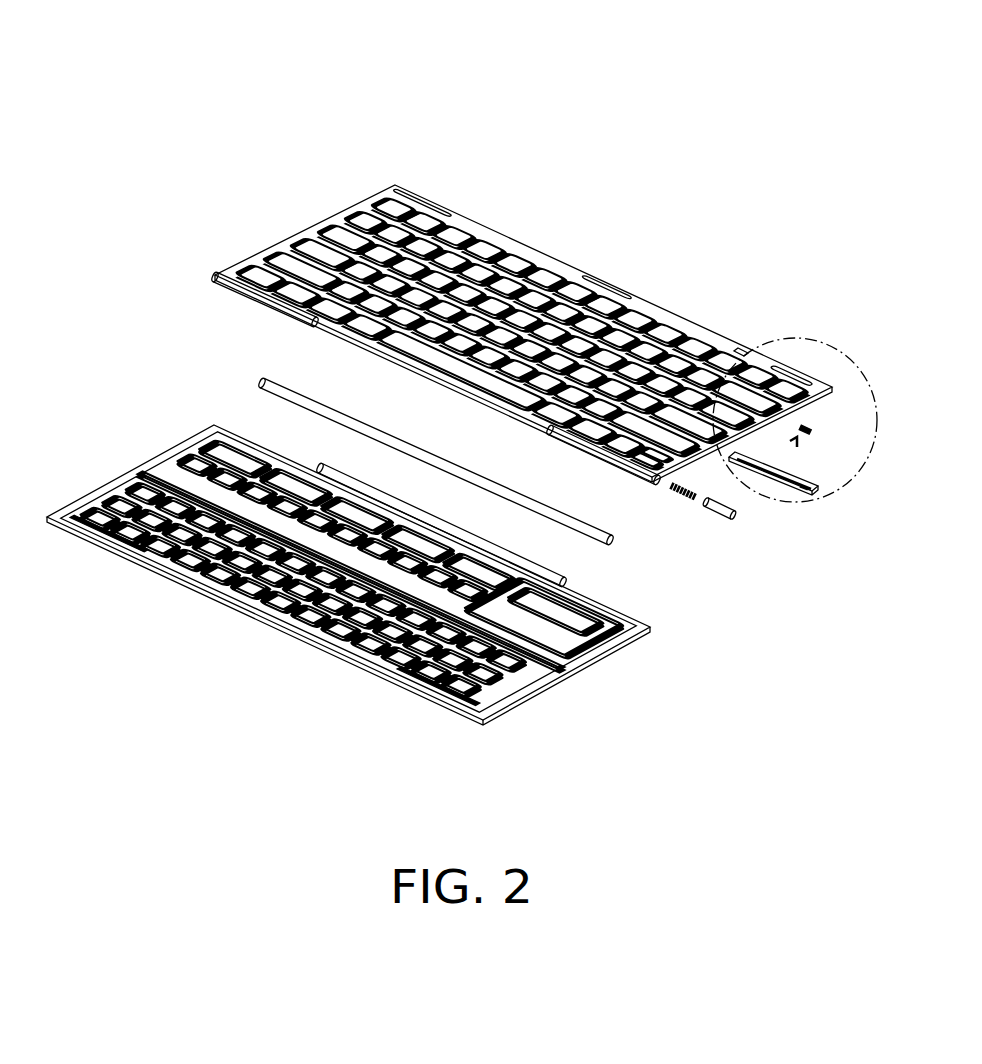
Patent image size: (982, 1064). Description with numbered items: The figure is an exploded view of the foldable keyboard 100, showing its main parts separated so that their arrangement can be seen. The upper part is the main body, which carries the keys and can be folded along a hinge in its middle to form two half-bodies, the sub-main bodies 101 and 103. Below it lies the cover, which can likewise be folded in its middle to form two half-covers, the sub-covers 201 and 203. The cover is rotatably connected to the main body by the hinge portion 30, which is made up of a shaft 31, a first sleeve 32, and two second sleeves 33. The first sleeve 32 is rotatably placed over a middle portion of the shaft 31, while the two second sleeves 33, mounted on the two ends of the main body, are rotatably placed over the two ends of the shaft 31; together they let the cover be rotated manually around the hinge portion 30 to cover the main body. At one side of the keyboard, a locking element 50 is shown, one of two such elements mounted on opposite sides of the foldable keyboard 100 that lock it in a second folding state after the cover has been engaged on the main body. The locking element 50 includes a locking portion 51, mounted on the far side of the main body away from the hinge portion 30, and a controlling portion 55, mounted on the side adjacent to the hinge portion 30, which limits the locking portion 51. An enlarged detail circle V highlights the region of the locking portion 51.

The foldable keyboard 100 is at (178, 52).
The sub-main body 101 is at (290, 243).
The sub-main body 103 is at (372, 198).
The hinge portion 30 is at (158, 306).
The shaft 31 is at (262, 383).
The first sleeve 32 is at (318, 468).
The second sleeves 33 is at (300, 316).
The locking element 50 is at (743, 352).
The locking portion 51 is at (822, 432).
The controlling portion 55 is at (713, 520).
The sub-cover 201 is at (618, 636).
The sub-cover 203 is at (525, 690).
The detail view circle V is at (800, 340).